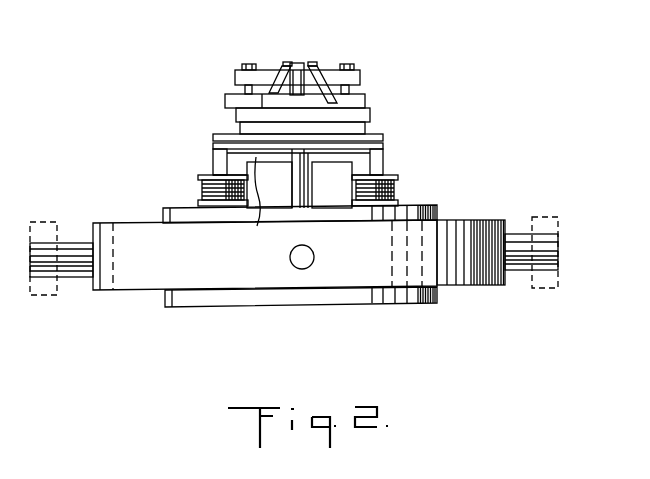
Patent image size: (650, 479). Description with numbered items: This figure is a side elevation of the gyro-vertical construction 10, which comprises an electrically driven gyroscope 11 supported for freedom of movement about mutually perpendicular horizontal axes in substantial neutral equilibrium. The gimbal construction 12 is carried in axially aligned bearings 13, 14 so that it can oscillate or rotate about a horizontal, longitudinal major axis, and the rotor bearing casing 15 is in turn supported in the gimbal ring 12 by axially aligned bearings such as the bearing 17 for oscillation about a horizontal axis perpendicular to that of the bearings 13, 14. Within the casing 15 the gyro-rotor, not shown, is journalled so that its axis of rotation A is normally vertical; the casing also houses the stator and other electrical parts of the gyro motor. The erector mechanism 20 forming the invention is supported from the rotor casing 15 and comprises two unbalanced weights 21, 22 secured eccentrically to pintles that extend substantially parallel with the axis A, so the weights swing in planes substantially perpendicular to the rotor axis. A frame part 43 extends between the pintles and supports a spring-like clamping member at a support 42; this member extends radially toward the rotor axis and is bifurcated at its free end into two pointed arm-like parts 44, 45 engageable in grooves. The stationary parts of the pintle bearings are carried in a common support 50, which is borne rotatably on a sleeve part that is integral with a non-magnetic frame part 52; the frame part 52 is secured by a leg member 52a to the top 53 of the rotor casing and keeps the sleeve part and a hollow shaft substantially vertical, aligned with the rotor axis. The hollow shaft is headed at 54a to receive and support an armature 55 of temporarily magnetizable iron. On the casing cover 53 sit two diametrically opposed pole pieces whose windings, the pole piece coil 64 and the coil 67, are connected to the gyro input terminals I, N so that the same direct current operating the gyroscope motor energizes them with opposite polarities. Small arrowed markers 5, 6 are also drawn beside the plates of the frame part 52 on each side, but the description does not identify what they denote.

The spacing dimension 5 is at (197, 148).
The spacing dimension 6 is at (203, 152).
The gyro-vertical construction 10 is at (191, 103).
The electrically driven gyroscope 11 is at (442, 304).
The gimbal construction 12 is at (487, 220).
The bearing 13 is at (552, 220).
The bearing 14 is at (42, 222).
The rotor bearing casing 15 is at (430, 203).
The bearing 17 is at (314, 257).
The erector mechanism 20 is at (381, 92).
The unbalanced weight 21 is at (238, 115).
The unbalanced weight 22 is at (234, 100).
The support 42 is at (287, 62).
The frame part 43 is at (360, 75).
The arm-like part 44 is at (328, 80).
The arm-like part 45 is at (277, 80).
The common support 50 is at (365, 136).
The frame part 52 is at (388, 142).
The leg member 52a is at (345, 178).
The top of the rotor casing 53 is at (435, 206).
The head 54a is at (254, 178).
The armature 55 is at (260, 202).
The pole piece coil 64 is at (198, 192).
The coil 67 is at (410, 199).
The input terminal I is at (181, 205).
The input terminal N is at (453, 147).
The axis of rotation A is at (302, 60).